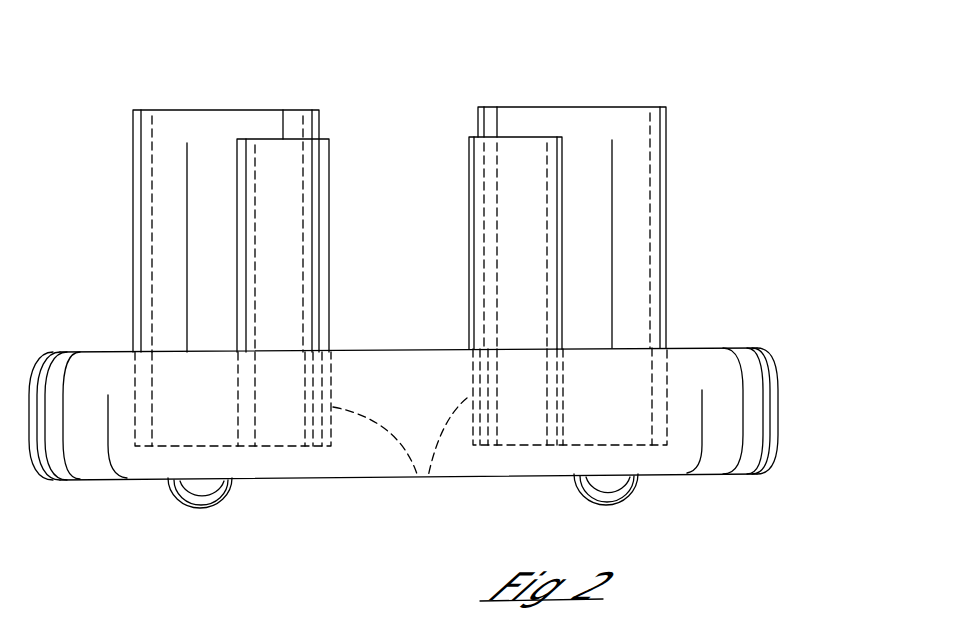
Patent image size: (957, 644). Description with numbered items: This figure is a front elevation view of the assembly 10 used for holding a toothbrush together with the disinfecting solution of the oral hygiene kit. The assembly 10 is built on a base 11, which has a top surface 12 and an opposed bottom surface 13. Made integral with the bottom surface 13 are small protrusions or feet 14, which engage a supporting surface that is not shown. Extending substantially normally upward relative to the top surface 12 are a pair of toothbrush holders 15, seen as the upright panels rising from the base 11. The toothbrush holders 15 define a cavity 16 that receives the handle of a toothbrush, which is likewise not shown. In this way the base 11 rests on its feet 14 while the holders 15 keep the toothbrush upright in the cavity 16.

The assembly 10 is at (690, 140).
The base 11 is at (688, 338).
The top surface 12 is at (105, 350).
The bottom surface 13 is at (708, 475).
The feet 14 is at (183, 491).
The toothbrush holders 15 is at (423, 480).
The cavity 16 is at (505, 118).